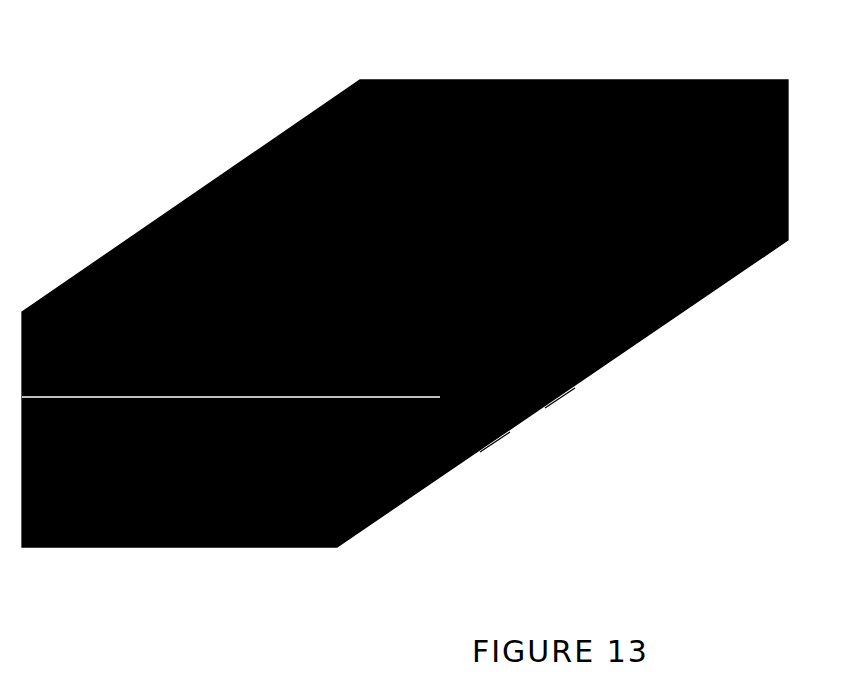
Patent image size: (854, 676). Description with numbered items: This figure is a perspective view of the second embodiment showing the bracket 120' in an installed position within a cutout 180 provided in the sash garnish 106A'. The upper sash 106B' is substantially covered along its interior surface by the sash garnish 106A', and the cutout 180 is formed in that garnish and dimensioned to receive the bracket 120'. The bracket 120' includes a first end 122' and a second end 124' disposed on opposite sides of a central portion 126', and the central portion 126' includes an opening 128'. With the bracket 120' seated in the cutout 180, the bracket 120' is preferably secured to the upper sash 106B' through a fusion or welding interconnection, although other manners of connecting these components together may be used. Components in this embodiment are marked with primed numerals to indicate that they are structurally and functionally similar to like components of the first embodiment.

The first end 122' is at (111, 268).
The central portion 126' is at (199, 182).
The bracket 120' is at (257, 159).
The opening 128' is at (326, 118).
The second end 124' is at (403, 202).
The sash garnish 106A' is at (574, 146).
The upper sash 106B' is at (515, 361).
The cutout 180 is at (433, 417).